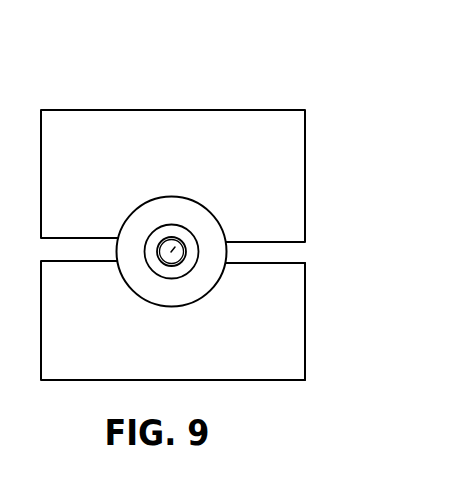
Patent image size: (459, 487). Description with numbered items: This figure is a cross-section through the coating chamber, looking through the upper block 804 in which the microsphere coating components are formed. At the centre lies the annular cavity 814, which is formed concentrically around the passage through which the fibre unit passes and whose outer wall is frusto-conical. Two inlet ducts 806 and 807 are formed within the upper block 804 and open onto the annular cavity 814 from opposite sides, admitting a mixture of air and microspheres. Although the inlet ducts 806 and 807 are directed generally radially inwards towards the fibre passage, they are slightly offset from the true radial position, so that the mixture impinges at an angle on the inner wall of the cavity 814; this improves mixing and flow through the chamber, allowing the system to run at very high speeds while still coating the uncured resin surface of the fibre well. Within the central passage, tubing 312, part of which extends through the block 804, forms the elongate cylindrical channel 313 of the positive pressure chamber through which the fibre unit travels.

The upper block 804 is at (257, 133).
The inlet duct 806 is at (67, 250).
The inlet duct 807 is at (258, 253).
The annular cavity 814 is at (133, 233).
The tubing 312 is at (170, 239).
The elongate cylindrical channel 313 is at (176, 247).